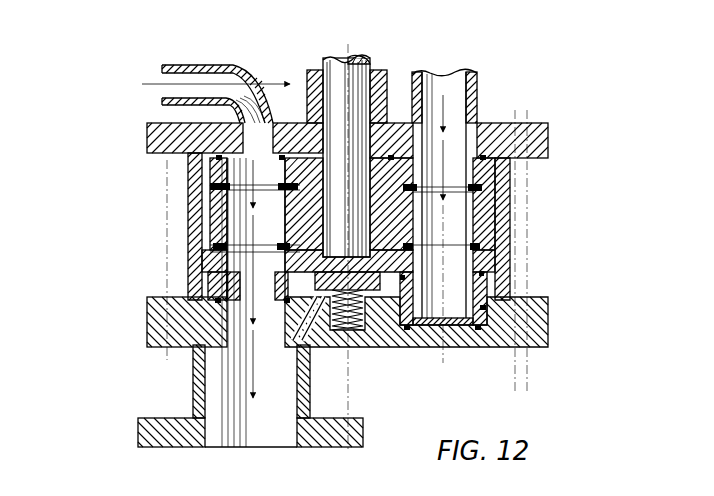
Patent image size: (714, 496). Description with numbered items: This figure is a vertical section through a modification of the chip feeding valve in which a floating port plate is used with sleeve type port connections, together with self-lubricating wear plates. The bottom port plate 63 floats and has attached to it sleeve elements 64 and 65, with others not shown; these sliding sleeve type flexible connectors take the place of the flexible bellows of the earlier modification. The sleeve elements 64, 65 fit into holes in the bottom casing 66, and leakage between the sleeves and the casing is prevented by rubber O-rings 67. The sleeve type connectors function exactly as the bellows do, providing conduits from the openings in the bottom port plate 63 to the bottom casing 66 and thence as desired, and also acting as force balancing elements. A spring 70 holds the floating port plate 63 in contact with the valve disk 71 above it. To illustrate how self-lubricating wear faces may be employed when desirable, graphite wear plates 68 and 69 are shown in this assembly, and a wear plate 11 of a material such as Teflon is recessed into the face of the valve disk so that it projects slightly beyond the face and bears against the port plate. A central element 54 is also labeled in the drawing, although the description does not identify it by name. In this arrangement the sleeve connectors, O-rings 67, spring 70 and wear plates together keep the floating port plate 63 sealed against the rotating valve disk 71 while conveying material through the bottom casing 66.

The wear plate 11 is at (503, 152).
The central tube 54 is at (355, 60).
The bottom port plate 63 is at (500, 264).
The sleeve element 64 is at (212, 282).
The sleeve element 65 is at (493, 278).
The bottom casing 66 is at (549, 312).
The rubber O-ring 67 is at (235, 298).
The graphite wear plate 68 is at (490, 207).
The graphite wear plate 69 is at (500, 232).
The spring 70 is at (357, 342).
The valve disk 71 is at (200, 213).